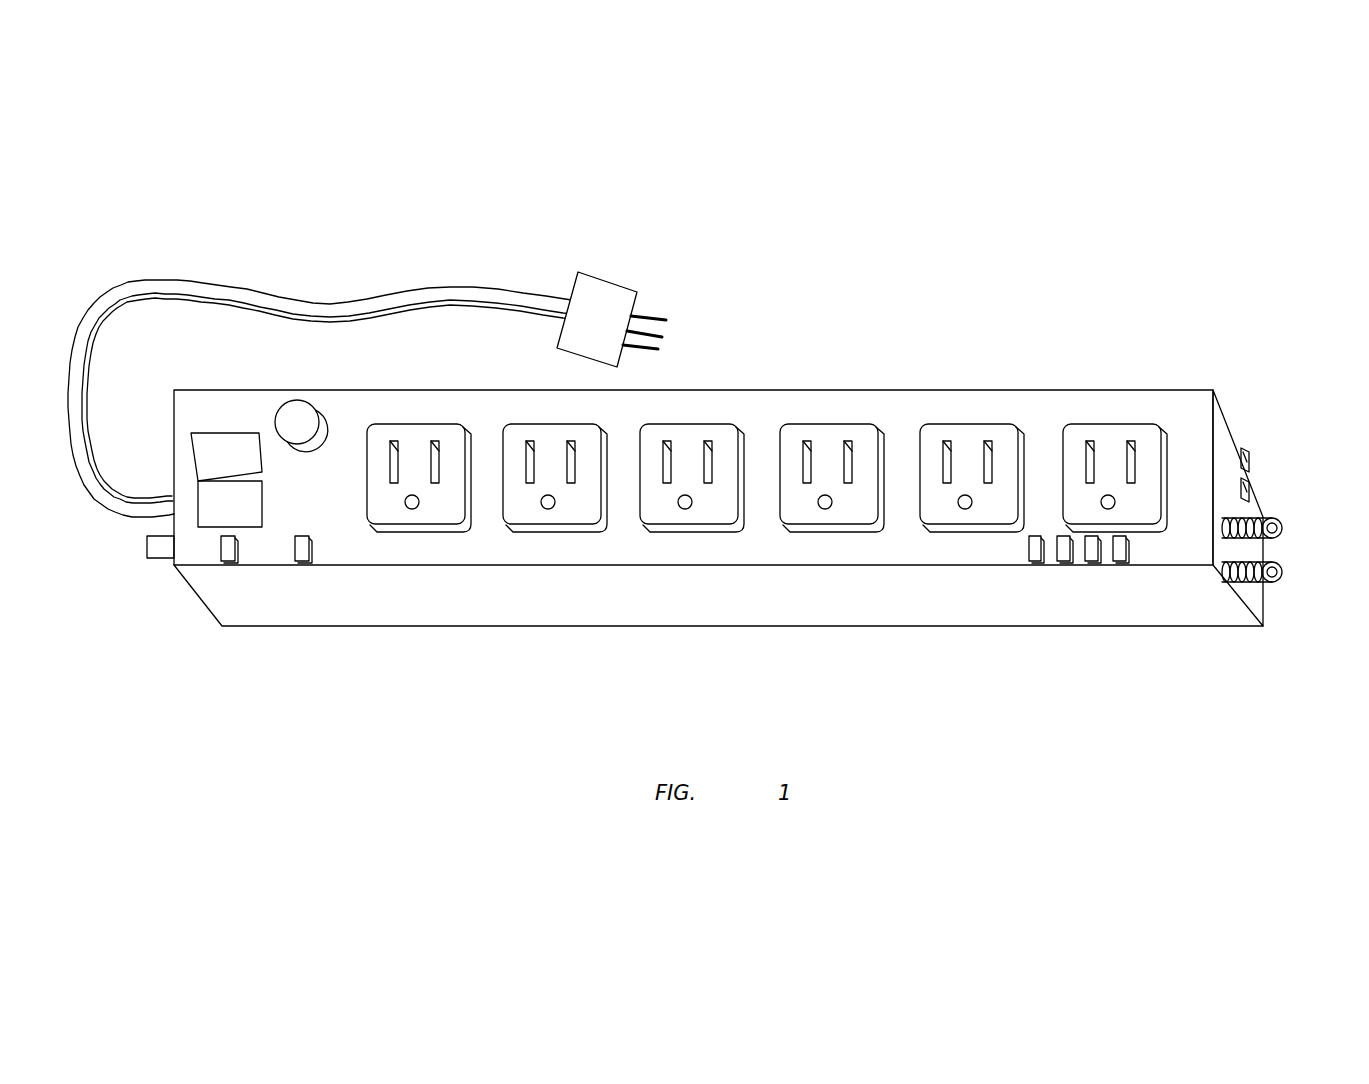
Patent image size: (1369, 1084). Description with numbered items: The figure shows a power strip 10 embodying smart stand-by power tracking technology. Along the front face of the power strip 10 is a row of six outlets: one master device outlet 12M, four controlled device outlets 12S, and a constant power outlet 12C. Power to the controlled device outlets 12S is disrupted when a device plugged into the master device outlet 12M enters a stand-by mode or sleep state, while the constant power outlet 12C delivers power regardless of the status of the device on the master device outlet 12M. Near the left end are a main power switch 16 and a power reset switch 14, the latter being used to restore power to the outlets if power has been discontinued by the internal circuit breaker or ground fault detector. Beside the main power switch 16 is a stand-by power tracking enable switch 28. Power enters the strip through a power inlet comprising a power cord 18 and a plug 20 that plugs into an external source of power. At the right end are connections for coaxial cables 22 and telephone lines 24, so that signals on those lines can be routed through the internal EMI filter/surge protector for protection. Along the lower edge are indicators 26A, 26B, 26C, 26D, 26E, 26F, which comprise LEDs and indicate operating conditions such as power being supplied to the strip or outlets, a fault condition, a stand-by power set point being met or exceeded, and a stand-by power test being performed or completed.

The power strip 10 is at (1046, 277).
The constant power outlet 12C is at (1097, 428).
The master device outlet 12M is at (430, 533).
The controlled device outlets 12S is at (563, 533).
The power reset switch 14 is at (146, 560).
The main power switch 16 is at (227, 433).
The power cord 18 is at (417, 291).
The plug 20 is at (632, 286).
The connections for coaxial cables 22 is at (1282, 535).
The connections for telephone lines 24 is at (1251, 485).
The indicator 26A is at (232, 564).
The indicator 26B is at (306, 564).
The indicator 26C is at (1036, 564).
The indicator 26D is at (1066, 564).
The indicator 26E is at (1094, 564).
The indicator 26F is at (1122, 564).
The stand-by power tracking enable switch 28 is at (292, 401).